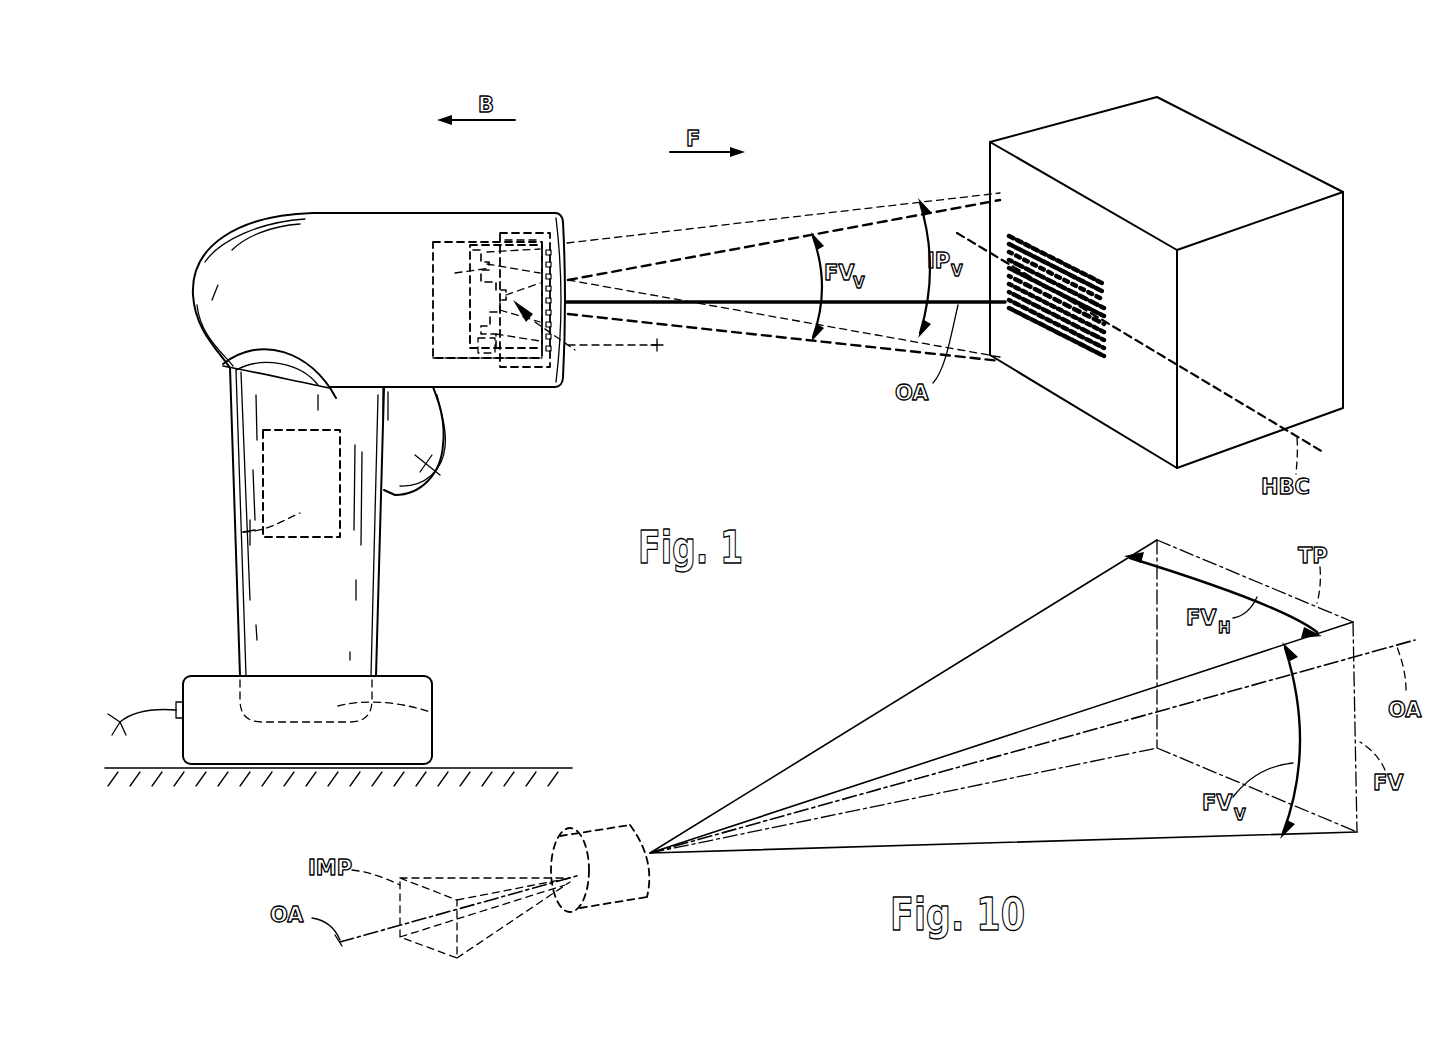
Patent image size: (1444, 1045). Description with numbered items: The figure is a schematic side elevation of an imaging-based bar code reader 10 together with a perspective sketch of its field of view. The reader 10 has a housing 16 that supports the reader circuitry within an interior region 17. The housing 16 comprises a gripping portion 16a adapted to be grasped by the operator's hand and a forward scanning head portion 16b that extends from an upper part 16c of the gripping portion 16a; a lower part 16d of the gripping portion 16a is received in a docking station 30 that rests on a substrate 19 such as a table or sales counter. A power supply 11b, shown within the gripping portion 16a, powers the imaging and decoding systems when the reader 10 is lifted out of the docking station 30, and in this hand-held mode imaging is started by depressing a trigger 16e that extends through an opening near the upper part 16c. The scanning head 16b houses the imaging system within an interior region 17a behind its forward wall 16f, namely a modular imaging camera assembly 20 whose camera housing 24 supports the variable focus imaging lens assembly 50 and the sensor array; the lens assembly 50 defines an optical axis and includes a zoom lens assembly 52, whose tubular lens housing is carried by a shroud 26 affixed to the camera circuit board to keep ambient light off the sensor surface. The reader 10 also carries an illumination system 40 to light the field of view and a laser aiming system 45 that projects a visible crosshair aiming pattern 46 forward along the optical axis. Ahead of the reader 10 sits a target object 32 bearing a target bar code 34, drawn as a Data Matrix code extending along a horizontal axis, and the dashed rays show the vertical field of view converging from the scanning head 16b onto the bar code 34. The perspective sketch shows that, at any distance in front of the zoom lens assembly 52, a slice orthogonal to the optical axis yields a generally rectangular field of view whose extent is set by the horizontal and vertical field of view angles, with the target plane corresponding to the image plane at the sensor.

In FIG. 1, the imaging-based bar code reader 10 is at (332, 150).
In FIG. 1, the power supply 11b is at (243, 532).
In FIG. 1, the housing 16 is at (204, 396).
In FIG. 1, the gripping portion 16a is at (232, 568).
In FIG. 1, the scanning head portion 16b is at (392, 213).
In FIG. 1, the upper part of the gripping portion 16c is at (228, 365).
In FIG. 1, the lower part of the gripping portion 16d is at (430, 712).
In FIG. 1, the trigger 16e is at (408, 497).
In FIG. 1, the front window wall 16f is at (575, 214).
In FIG. 1, the interior region of the housing 17 is at (287, 410).
In FIG. 1, the interior region of the scanning head 17a is at (500, 232).
In FIG. 1, the substrate 19 is at (532, 768).
In FIG. 1, the imaging camera assembly 20 is at (460, 273).
In FIG. 1, the camera housing 24 is at (440, 326).
In FIG. 1, the shroud 26 is at (465, 298).
In FIG. 1, the docking station 30 is at (435, 676).
In FIG. 1, the target object 32 is at (1108, 436).
In FIG. 1, the target bar code 34 is at (1043, 348).
In FIG. 1, the illumination system 40 is at (512, 235).
In FIG. 1, the laser aiming system 45 is at (490, 376).
In FIG. 1, the crosshair aiming pattern 46 is at (658, 348).
In FIG. 1, the variable focus imaging lens assembly 50 is at (457, 275).
In FIG. 1, the zoom lens assembly 52 is at (575, 350).
In FIG. 10, the zoom lens assembly 52 is at (552, 838).